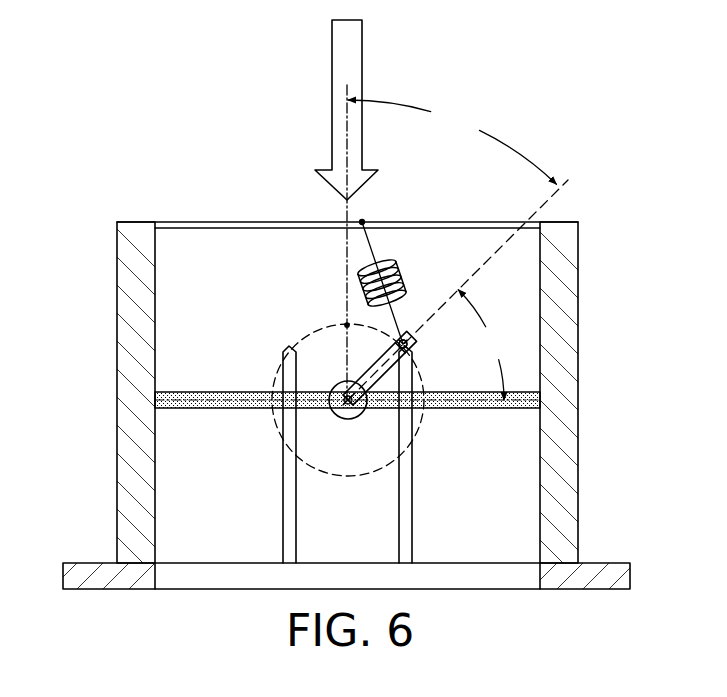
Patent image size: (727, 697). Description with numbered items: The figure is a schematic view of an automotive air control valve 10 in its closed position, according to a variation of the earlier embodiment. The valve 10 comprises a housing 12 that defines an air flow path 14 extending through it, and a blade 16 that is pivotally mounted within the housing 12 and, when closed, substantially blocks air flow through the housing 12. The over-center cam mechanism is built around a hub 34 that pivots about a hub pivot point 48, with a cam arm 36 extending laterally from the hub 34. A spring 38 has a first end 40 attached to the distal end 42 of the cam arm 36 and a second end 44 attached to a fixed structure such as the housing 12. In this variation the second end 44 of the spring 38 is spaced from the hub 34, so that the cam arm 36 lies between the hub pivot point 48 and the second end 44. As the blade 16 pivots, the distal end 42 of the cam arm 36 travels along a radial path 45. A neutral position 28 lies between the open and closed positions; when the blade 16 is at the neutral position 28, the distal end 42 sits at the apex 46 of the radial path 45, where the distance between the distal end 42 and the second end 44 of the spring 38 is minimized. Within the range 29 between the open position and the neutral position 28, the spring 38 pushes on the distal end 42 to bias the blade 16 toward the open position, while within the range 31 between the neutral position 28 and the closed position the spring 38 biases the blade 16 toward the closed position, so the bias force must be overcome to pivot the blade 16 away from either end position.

The automotive air control valve 10 is at (140, 190).
The housing 12 is at (131, 260).
The air flow path 14 is at (332, 65).
The blade 16 is at (238, 406).
The neutral position 28 is at (553, 195).
The range between the open position and the neutral position 29 is at (452, 142).
The range between the neutral position and the closed position 31 is at (484, 345).
The hub 34 is at (348, 418).
The cam arm 36 is at (372, 364).
The spring 38 is at (400, 278).
The first end of the spring 40 is at (407, 350).
The distal end of the cam arm 42 is at (403, 344).
The second end of the spring 44 is at (362, 222).
The radial path 45 is at (283, 348).
The apex 46 is at (347, 325).
The hub pivot point 48 is at (345, 418).